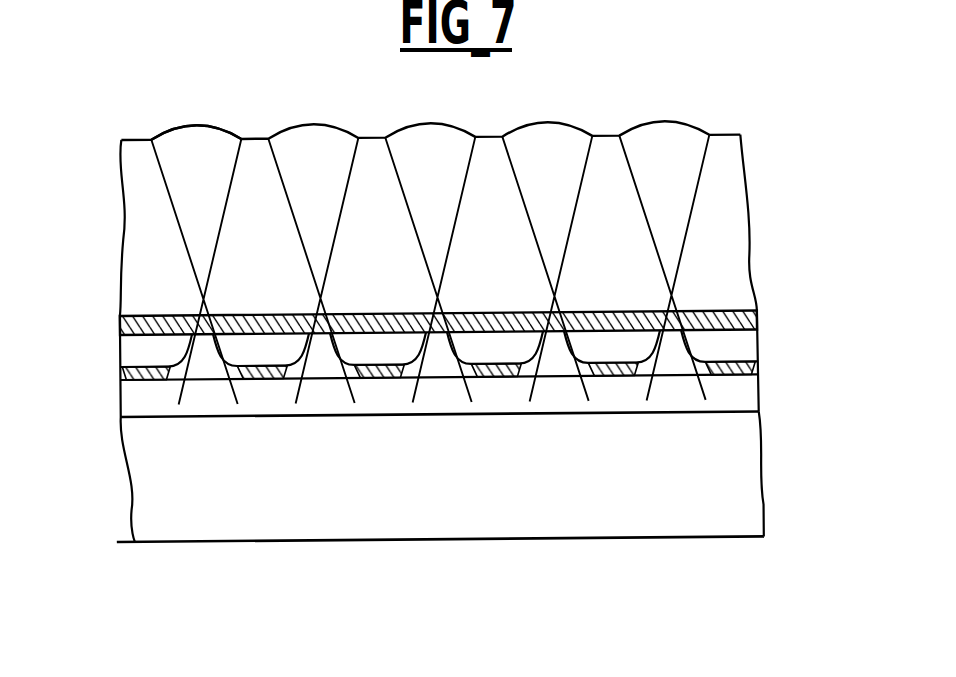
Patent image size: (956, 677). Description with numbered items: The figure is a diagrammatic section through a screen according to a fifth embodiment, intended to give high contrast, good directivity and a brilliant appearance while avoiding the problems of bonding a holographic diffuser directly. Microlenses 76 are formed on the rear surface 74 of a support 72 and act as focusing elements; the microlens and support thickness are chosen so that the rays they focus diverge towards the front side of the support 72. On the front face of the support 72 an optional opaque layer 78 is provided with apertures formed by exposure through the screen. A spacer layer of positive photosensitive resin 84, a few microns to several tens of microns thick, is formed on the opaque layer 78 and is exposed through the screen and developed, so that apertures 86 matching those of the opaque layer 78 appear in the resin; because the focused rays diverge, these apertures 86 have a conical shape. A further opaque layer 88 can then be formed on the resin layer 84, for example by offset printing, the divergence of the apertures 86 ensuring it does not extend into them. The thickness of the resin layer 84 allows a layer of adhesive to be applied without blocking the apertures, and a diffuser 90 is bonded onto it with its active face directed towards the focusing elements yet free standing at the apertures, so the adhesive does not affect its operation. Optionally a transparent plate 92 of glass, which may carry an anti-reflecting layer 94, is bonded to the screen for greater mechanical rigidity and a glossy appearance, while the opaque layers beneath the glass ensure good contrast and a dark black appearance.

The support 72 is at (140, 208).
The rear surface 74 is at (140, 137).
The microlenses 76 is at (197, 127).
The opaque layer 78 is at (130, 328).
The layer of positive photosensitive resin 84 is at (137, 353).
The apertures 86 is at (682, 348).
The opaque layer 88 is at (122, 375).
The diffuser 90 is at (748, 394).
The transparent plate 92 is at (408, 485).
The anti-reflecting layer 94 is at (680, 537).